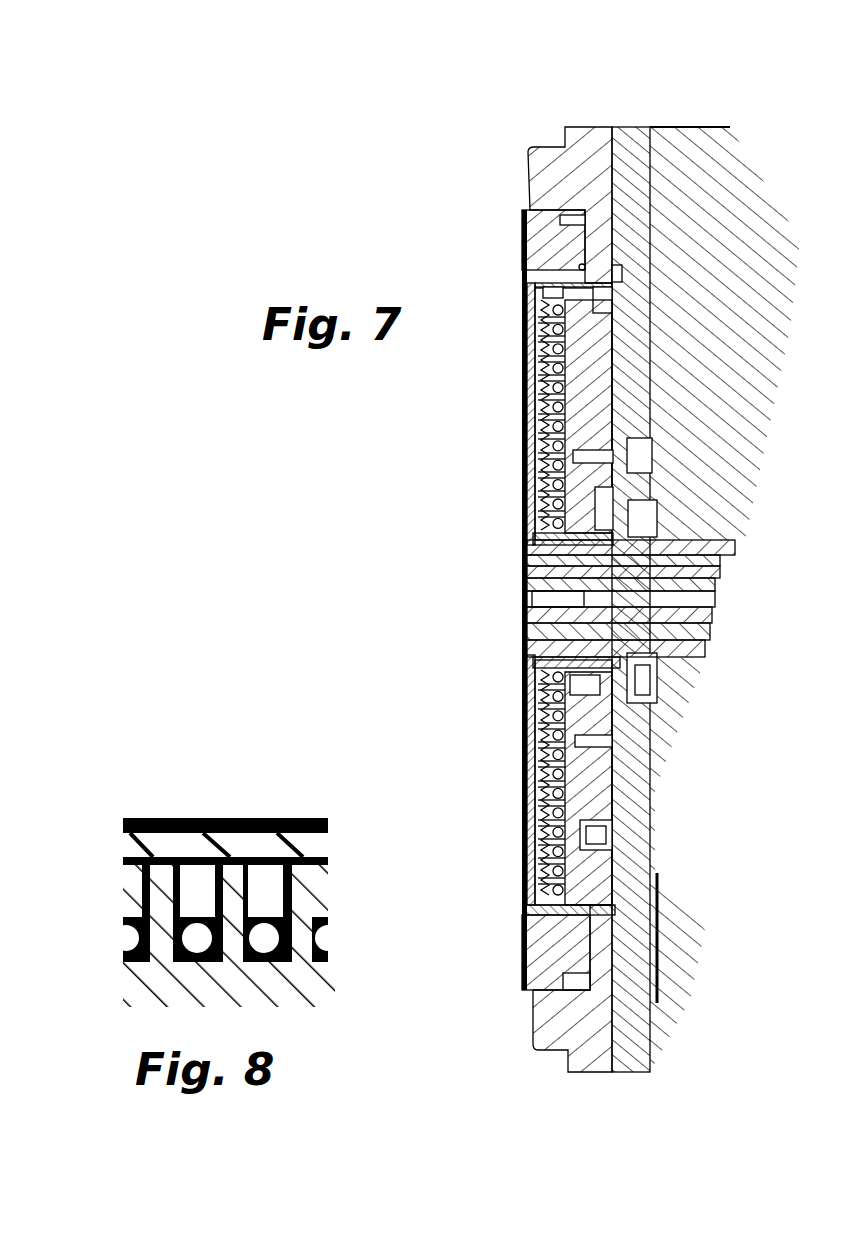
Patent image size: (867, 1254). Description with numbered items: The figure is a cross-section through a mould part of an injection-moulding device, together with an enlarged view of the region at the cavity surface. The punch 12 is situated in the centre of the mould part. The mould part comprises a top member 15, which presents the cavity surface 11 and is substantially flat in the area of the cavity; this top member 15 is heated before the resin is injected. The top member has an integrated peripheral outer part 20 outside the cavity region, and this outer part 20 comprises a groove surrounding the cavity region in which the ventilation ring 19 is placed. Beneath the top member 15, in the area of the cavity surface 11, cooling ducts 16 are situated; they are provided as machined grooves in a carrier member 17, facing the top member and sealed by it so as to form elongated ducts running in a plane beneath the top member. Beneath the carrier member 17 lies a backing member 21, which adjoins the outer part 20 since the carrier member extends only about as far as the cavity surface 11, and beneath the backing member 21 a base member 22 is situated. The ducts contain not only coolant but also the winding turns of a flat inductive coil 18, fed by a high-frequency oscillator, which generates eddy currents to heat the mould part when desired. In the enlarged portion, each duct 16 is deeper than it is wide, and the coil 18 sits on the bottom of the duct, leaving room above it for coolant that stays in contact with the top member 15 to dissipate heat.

In FIG. 7, the cavity surface 11 is at (523, 462).
In FIG. 8, the cavity surface 11 is at (149, 816).
In FIG. 7, the punch 12 is at (527, 598).
In FIG. 7, the top member 15 is at (523, 413).
In FIG. 8, the top member 15 is at (193, 937).
In FIG. 7, the cooling ducts 16 is at (540, 387).
In FIG. 8, the cooling ducts 16 is at (259, 890).
In FIG. 7, the carrier member 17 is at (580, 383).
In FIG. 8, the carrier member 17 is at (182, 982).
In FIG. 7, the flat inductive coil 18 is at (527, 753).
In FIG. 8, the flat inductive coil 18 is at (203, 862).
In FIG. 7, the ventilation ring 19 is at (538, 235).
In FIG. 7, the peripheral outer part 20 is at (550, 172).
In FIG. 7, the backing member 21 is at (628, 153).
In FIG. 7, the base member 22 is at (672, 148).